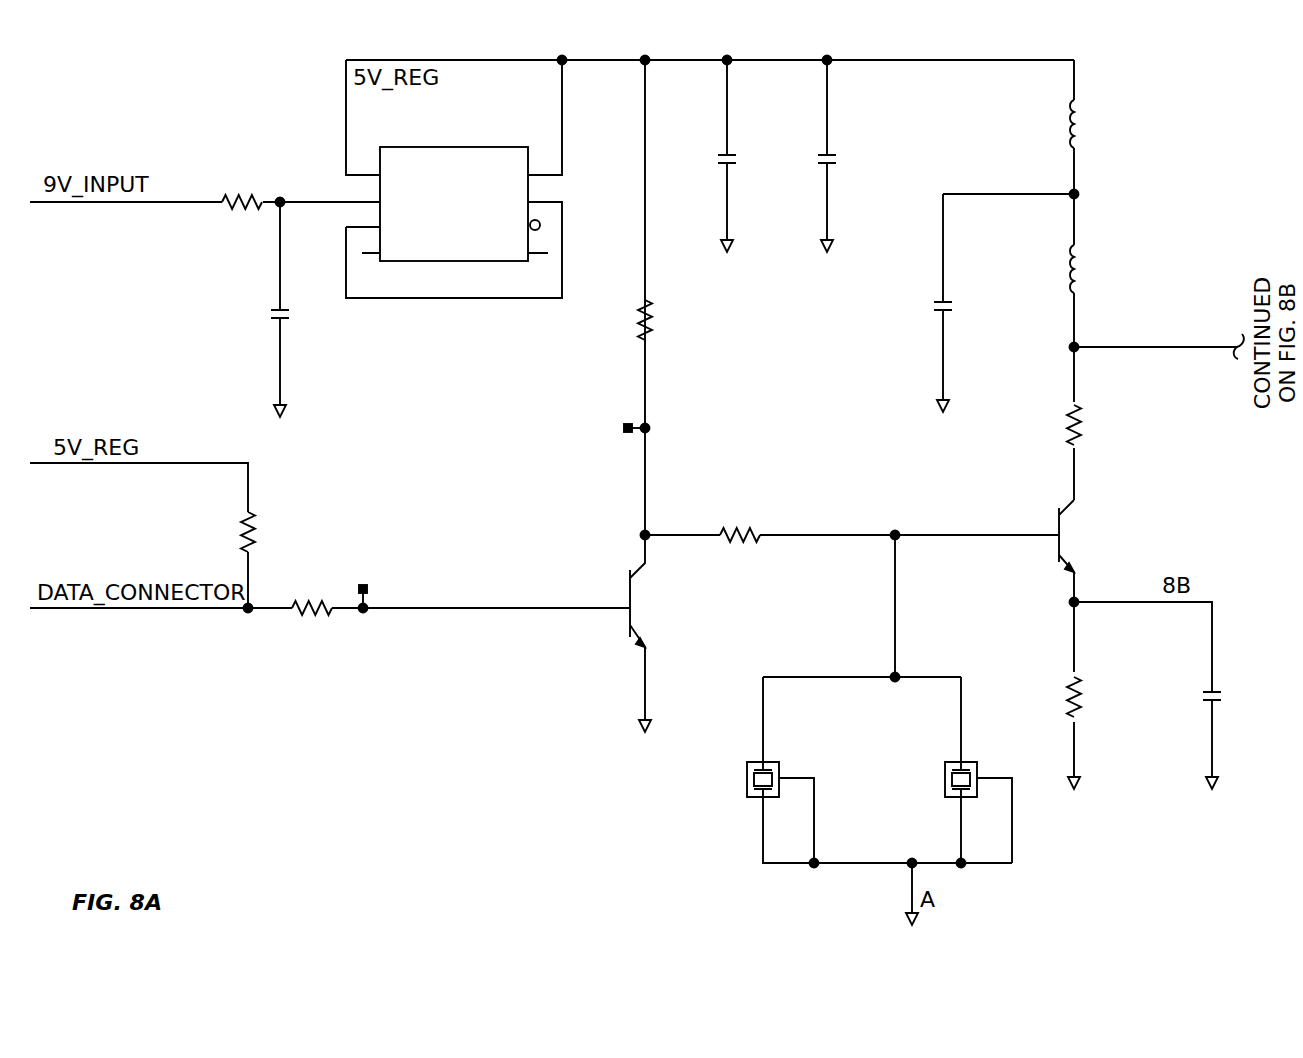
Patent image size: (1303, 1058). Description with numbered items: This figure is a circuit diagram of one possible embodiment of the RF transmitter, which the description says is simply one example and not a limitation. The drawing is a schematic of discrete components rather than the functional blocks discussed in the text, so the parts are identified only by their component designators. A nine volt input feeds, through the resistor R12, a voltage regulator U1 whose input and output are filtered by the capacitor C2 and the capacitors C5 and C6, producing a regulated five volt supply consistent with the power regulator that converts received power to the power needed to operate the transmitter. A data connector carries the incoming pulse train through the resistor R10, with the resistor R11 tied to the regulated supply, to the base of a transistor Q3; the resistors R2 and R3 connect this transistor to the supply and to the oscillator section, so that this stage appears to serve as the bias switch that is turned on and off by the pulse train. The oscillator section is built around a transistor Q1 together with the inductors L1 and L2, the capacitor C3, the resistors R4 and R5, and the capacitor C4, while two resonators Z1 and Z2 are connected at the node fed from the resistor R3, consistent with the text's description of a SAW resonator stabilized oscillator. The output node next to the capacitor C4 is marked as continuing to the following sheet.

The resistor 100 ohm 1/4W R12 is at (242, 216).
The LP2951 voltage regulator U1 is at (451, 201).
The capacitor 10UF tantalum C2 is at (304, 309).
The resistor 10.0K R11 is at (262, 526).
The resistor R10 is at (330, 598).
The resistor 10.0K R2 is at (677, 354).
The resistor 33.0K R3 is at (748, 546).
The transistor MMBT3904 Q3 is at (684, 633).
The crystal resonator 433.92MHZ Z1 is at (709, 782).
The crystal resonator 433.92MHZ Z2 is at (945, 774).
The capacitor 10UF tantalum C5 is at (750, 156).
The capacitor 0.01UF C6 is at (854, 156).
The inductor 1000NH L1 is at (1124, 125).
The inductor 68NH L2 is at (1110, 272).
The capacitor 7PF C3 is at (966, 303).
The resistor 8.20 ohm R4 is at (1116, 415).
The transistor BFR181 Q1 is at (1105, 544).
The resistor 47.5 ohm R5 is at (1117, 721).
The capacitor 15PF C4 is at (1236, 719).